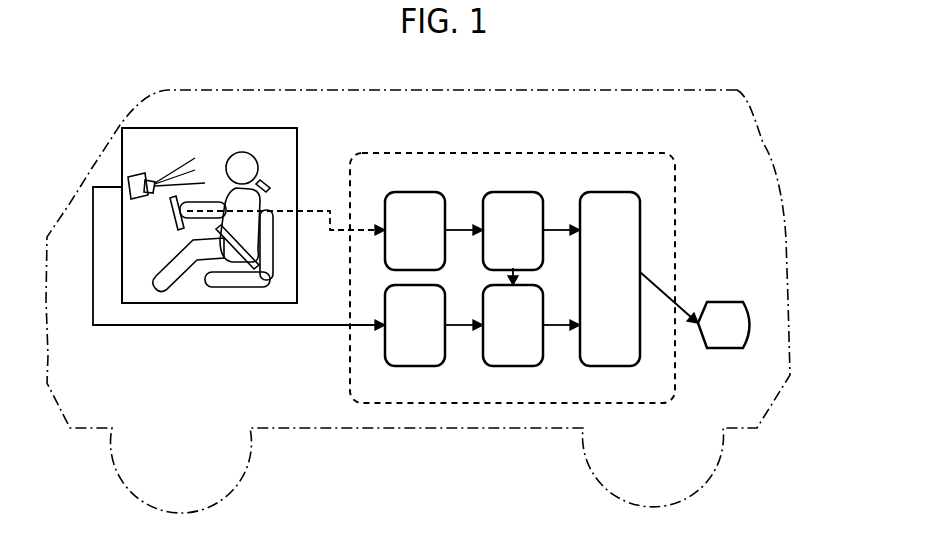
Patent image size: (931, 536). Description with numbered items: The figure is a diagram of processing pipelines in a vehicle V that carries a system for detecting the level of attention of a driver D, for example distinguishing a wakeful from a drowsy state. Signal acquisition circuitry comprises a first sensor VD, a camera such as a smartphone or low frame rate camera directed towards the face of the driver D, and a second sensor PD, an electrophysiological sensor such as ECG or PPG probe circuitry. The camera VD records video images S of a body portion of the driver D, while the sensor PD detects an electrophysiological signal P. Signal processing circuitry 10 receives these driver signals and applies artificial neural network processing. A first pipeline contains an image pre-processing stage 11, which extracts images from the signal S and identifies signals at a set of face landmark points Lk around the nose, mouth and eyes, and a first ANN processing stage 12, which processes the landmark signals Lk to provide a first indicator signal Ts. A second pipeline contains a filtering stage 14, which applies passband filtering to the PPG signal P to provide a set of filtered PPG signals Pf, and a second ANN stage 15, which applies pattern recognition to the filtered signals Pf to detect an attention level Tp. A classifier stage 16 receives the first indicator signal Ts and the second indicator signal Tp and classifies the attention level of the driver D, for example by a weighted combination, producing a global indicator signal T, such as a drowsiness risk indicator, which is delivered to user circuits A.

The vehicle V is at (745, 157).
The driver D is at (257, 152).
The first sensor VD is at (137, 178).
The second sensor PD is at (170, 197).
The signal processing circuitry 10 is at (488, 151).
The image pre-processing stage 11 is at (401, 337).
The first ANN processing stage 12 is at (499, 337).
The filtering stage 14 is at (401, 241).
The second ANN stage 15 is at (499, 241).
The classifier stage 16 is at (593, 301).
The user circuits A is at (727, 308).
The electrophysiological signal P is at (286, 215).
The first driver signal S is at (239, 258).
The global indicator signal T is at (669, 297).
The set of filtered PPG signals Pf is at (464, 215).
The second indicator signal Tp is at (561, 211).
The first indicator signal Ts is at (561, 306).
The set of face landmark points Lk is at (464, 308).